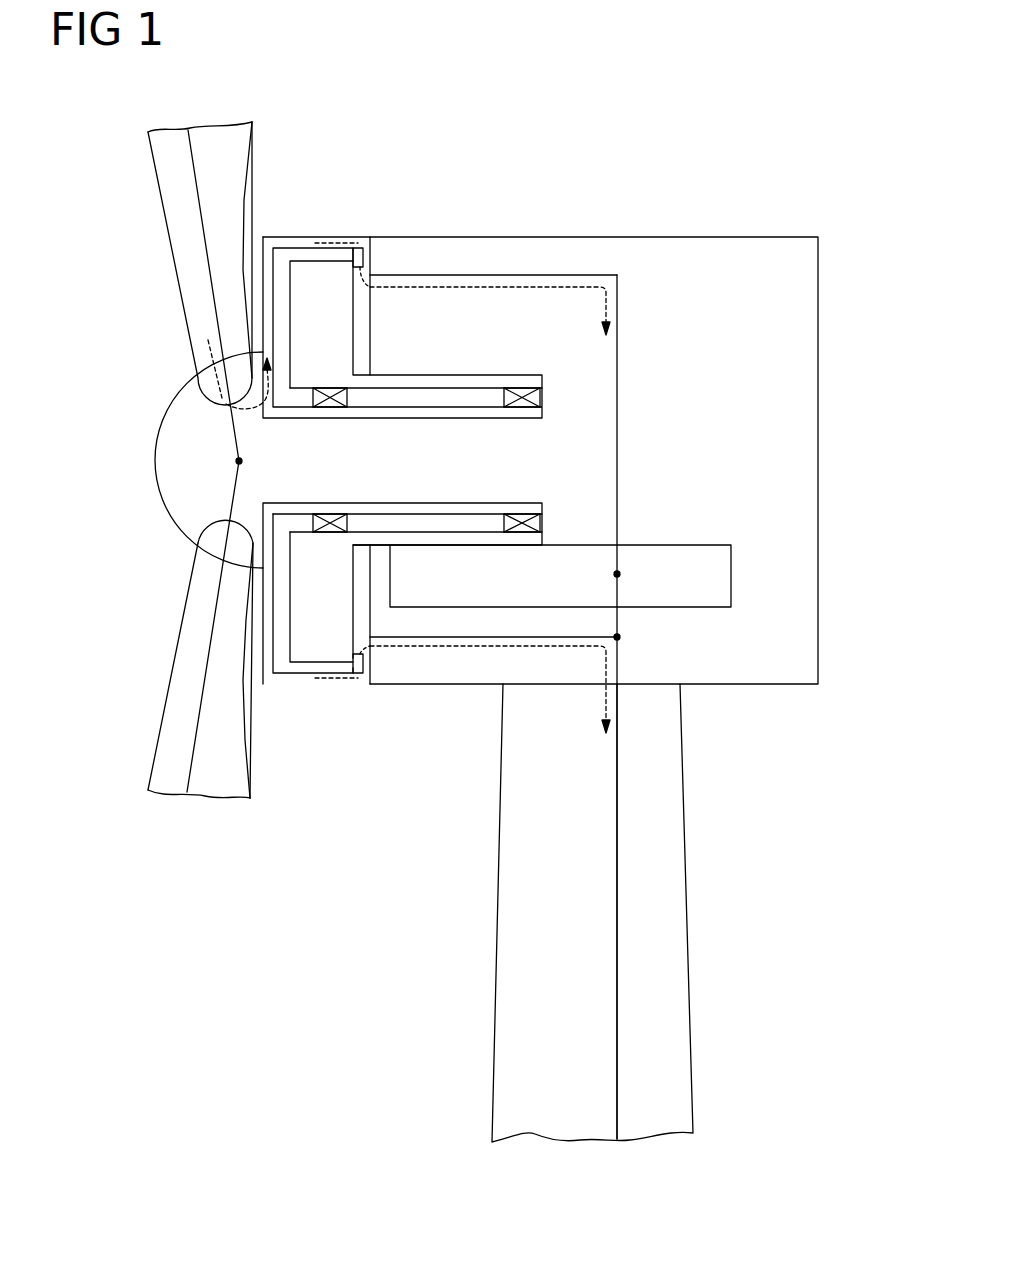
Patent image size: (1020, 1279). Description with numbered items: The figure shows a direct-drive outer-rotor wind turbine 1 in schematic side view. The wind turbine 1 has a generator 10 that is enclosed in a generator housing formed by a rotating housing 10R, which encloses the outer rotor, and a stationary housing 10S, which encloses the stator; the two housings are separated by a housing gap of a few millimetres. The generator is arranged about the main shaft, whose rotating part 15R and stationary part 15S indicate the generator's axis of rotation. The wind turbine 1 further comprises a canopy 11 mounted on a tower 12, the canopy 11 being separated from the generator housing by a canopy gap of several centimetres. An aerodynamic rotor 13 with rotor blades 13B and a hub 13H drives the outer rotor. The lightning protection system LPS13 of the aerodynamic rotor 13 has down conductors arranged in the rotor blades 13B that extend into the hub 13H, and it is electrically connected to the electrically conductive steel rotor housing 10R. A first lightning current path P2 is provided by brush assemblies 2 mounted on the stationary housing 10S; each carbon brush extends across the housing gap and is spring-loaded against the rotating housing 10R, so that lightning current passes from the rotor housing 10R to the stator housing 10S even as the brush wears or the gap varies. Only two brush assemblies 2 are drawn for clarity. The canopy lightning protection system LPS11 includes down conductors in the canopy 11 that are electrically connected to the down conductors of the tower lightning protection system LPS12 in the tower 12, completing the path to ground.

The wind turbine 1 is at (758, 178).
The brush assembly 2 is at (367, 237).
The generator 10 is at (337, 340).
The rotating housing 10R is at (297, 237).
The stationary housing 10S is at (300, 660).
The canopy 11 is at (594, 237).
The tower 12 is at (680, 962).
The aerodynamic rotor 13 is at (133, 407).
The rotor blade 13B is at (187, 288).
The hub 13H is at (162, 463).
The rotating part of main shaft 15R is at (413, 419).
The stationary part of main shaft 15S is at (477, 530).
The first lightning current path P2 is at (485, 290).
The canopy lightning protection system LPS11 is at (617, 462).
The tower lightning protection system LPS12 is at (618, 903).
The rotor lightning protection system LPS13 is at (200, 700).